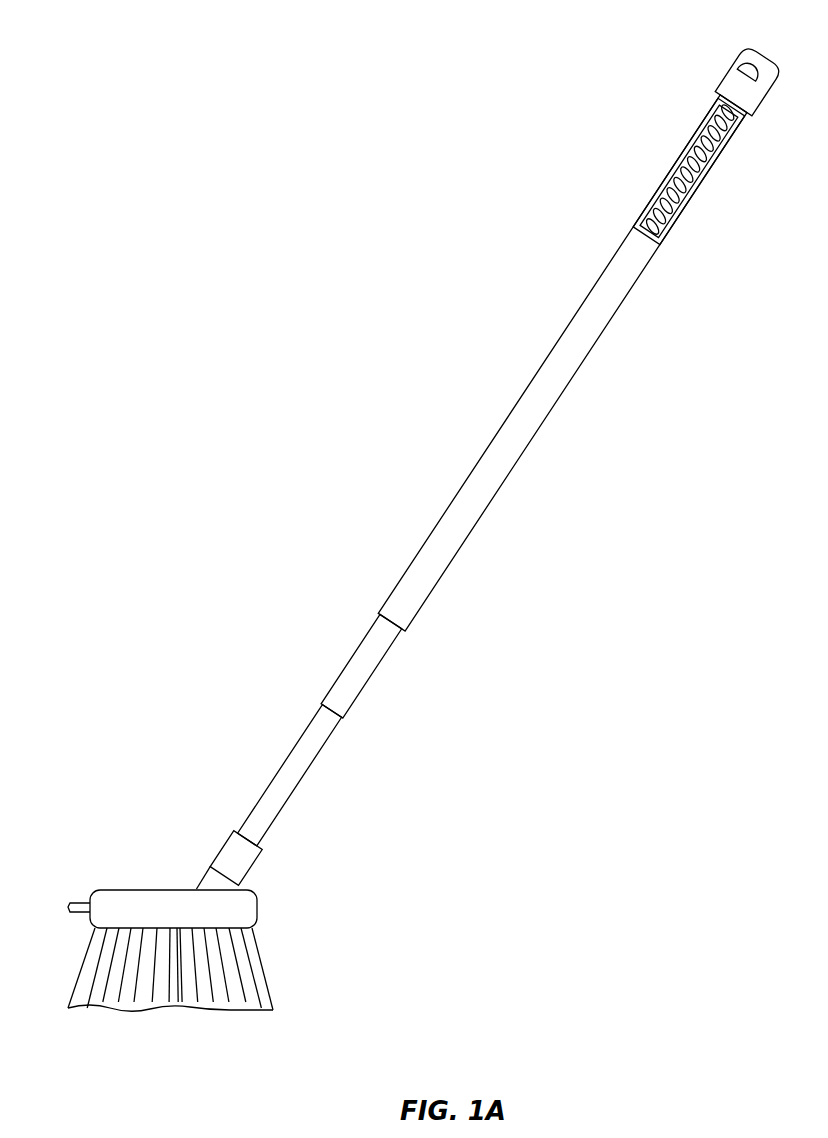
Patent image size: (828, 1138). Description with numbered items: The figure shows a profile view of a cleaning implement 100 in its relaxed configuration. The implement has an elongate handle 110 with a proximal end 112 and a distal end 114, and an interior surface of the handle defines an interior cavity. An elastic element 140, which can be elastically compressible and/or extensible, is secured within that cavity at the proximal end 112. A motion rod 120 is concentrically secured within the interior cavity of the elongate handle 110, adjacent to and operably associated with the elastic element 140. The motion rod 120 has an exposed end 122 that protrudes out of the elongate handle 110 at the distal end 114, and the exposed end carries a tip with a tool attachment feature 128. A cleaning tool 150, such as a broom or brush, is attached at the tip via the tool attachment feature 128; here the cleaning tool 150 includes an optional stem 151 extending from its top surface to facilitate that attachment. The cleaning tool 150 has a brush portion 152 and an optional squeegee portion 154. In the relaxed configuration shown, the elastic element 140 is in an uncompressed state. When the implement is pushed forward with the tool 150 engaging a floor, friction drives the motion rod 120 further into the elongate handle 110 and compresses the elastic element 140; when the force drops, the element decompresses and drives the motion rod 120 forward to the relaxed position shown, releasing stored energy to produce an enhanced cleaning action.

The cleaning implement 100 is at (322, 303).
The elongate handle 110 is at (513, 420).
The proximal end 112 is at (727, 35).
The distal end 114 is at (366, 607).
The motion rod 120 is at (360, 666).
The exposed end 122 is at (378, 715).
The tool attachment feature 128 is at (232, 860).
The elastic element 140 is at (680, 163).
The cleaning tool 150 is at (117, 900).
The stem 151 is at (208, 885).
The brush portion 152 is at (250, 955).
The squeegee portion 154 is at (83, 903).